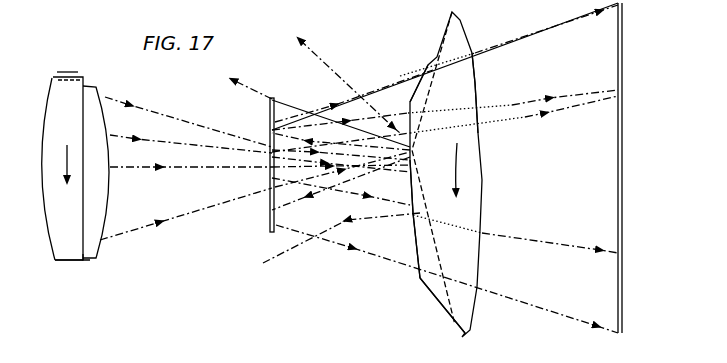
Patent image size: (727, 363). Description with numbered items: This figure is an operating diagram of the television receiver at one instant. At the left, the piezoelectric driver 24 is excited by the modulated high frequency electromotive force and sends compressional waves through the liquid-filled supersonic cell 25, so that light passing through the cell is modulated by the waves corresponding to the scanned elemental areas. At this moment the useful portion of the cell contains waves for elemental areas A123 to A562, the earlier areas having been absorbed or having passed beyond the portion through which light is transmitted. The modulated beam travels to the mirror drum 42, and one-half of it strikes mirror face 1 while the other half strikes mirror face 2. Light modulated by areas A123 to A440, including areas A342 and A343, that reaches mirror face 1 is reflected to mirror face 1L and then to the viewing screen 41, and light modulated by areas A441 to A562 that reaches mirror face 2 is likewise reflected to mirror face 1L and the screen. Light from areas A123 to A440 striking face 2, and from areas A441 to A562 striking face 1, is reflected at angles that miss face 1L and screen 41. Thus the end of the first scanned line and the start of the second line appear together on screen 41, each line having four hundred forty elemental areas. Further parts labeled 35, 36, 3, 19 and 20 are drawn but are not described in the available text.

The lens 35 is at (46, 236).
The piezoelectric driver 24 is at (77, 72).
The supersonic cell 25 is at (77, 262).
The lens edge 36 is at (89, 258).
The mirror face 1L is at (269, 104).
The mirror face 2 is at (440, 42).
The incident surface 3 is at (416, 90).
The mirror drum 42 is at (477, 96).
The side surface 20 is at (408, 212).
The mirror face 1 is at (420, 248).
The end surface 19 is at (437, 299).
The viewing screen 41 is at (625, 163).
The elemental area A562 is at (127, 103).
The elemental area A441 is at (146, 140).
The elemental area A440 is at (584, 320).
The elemental area A343 is at (585, 236).
The elemental area A342 is at (128, 168).
The elemental area A123 is at (139, 229).